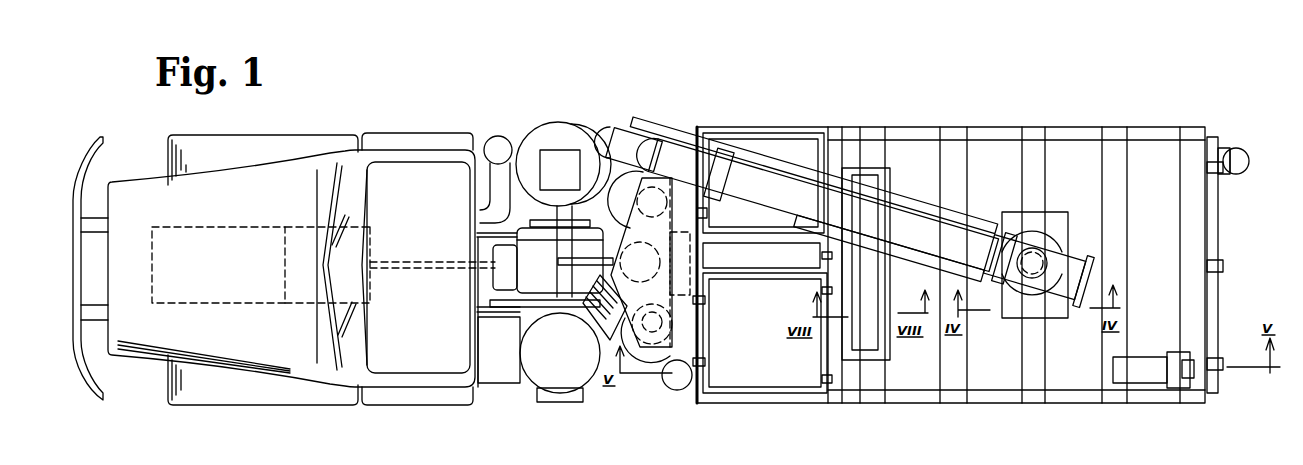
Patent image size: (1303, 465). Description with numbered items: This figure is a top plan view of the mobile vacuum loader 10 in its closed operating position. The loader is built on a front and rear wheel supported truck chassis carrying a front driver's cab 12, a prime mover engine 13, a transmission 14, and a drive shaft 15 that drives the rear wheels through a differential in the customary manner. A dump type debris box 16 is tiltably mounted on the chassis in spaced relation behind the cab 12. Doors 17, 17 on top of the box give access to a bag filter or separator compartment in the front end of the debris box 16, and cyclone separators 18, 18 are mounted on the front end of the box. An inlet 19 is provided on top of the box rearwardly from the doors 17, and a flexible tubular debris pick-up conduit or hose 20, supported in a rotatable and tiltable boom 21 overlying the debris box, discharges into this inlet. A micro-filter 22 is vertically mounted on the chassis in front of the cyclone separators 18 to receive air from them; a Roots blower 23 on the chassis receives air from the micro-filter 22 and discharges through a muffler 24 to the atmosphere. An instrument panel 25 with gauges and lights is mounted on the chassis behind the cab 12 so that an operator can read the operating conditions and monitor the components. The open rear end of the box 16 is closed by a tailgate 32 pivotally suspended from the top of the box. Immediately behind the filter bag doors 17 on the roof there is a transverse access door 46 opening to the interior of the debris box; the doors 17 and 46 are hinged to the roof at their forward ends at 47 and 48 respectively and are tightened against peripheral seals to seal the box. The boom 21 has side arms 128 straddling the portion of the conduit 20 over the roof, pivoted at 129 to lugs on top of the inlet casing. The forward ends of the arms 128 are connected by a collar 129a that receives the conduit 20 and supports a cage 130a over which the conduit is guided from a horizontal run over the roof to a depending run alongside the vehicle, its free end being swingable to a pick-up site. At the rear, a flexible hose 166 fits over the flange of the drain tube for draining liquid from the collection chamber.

The loader 10 is at (1203, 124).
The driver's cab 12 is at (405, 385).
The prime mover engine 13 is at (229, 226).
The transmission 14 is at (375, 228).
The drive shaft 15 is at (414, 270).
The debris box 16 is at (990, 157).
The doors 17 is at (760, 378).
The cyclone separators 18 is at (612, 212).
The inlet 19 is at (1080, 257).
The debris pick-up conduit 20 is at (982, 225).
The boom 21 is at (921, 197).
The micro-filter 22 is at (570, 354).
The Roots blower 23 is at (542, 272).
The muffler 24 is at (553, 128).
The instrument panel 25 is at (497, 368).
The tailgate 32 is at (1220, 213).
The transverse access door 46 is at (878, 170).
The hinge 47 is at (706, 363).
The hinge 48 is at (838, 333).
The side arms 128 is at (778, 200).
The pivot 129 is at (1013, 233).
The collar 129a is at (723, 140).
The cage 130a is at (645, 125).
The flexible hose 166 is at (1245, 150).